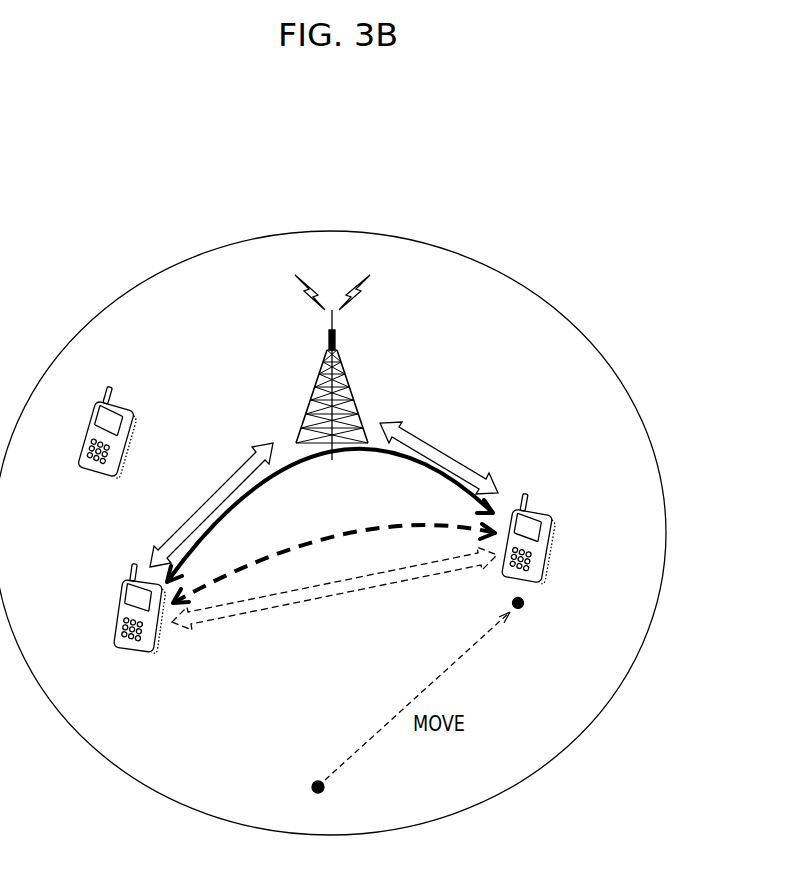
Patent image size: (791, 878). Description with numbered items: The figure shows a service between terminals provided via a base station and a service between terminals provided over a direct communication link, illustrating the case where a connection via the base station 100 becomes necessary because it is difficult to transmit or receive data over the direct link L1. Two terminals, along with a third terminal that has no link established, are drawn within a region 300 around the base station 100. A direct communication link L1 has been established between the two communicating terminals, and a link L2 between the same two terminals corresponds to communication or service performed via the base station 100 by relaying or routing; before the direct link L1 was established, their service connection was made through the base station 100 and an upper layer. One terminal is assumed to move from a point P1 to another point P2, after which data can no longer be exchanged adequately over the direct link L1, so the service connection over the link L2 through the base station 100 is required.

The service area / cell coverage 300 is at (502, 272).
The base station 100 is at (343, 373).
The direct communication link L1 is at (334, 555).
The link L2 is at (330, 515).
The point P1 is at (320, 802).
The point P2 is at (532, 604).